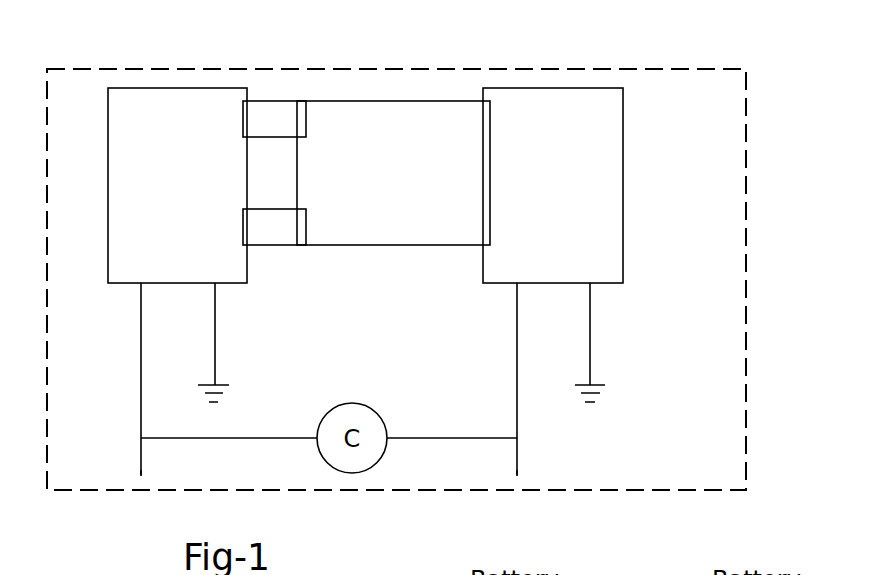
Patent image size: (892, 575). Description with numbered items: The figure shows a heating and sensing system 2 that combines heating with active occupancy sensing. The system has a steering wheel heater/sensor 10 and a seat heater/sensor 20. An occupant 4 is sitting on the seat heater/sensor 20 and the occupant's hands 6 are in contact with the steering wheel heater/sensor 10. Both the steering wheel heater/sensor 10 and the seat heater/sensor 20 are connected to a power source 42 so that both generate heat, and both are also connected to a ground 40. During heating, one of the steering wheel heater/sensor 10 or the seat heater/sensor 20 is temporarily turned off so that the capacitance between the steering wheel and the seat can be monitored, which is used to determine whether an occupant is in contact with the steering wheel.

The heating and sensing system 2 is at (747, 171).
The occupant 4 is at (368, 117).
The occupant's hands 6 is at (272, 110).
The steering wheel heater/sensor 10 is at (171, 103).
The seat heater/sensor 20 is at (547, 105).
The ground 40 is at (232, 378).
The power source 42 is at (138, 475).